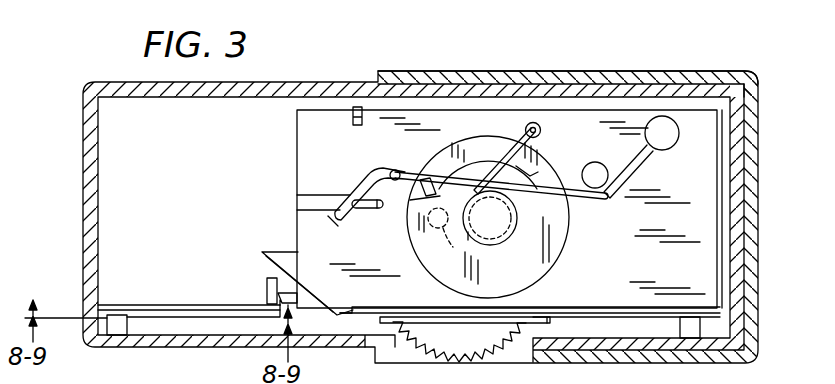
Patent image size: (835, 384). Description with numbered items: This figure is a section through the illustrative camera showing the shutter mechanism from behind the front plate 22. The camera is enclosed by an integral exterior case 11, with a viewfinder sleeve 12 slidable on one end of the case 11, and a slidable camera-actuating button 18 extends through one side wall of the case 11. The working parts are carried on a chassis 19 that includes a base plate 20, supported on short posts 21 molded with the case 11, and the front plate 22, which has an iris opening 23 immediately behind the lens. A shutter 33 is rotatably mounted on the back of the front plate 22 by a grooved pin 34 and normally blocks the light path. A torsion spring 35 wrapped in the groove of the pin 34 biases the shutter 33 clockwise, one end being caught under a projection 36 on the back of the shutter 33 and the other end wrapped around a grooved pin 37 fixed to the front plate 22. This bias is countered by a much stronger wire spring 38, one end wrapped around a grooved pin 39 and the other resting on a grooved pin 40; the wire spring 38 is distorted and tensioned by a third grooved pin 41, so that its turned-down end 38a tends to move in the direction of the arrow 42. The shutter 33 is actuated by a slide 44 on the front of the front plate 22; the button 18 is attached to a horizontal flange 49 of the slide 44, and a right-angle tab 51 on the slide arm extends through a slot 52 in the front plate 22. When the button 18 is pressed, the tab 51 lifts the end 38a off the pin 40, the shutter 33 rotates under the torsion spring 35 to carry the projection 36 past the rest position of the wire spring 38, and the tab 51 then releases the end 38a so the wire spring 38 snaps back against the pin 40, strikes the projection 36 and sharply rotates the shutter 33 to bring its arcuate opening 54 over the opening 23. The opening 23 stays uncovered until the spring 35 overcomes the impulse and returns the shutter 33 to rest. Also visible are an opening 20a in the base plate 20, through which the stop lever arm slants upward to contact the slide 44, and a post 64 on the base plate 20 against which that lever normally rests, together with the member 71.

The exterior case 11 is at (88, 155).
The viewfinder sleeve 12 is at (570, 80).
The camera-actuating button 18 is at (472, 351).
The chassis 19 is at (290, 148).
The base plate 20 is at (598, 308).
The opening in base plate 20a is at (352, 312).
The short posts 21 is at (120, 323).
The front plate 22 is at (648, 266).
The iris opening 23 is at (441, 229).
The shutter 33 is at (528, 273).
The grooved pin 34 is at (505, 230).
The torsion spring 35 is at (523, 133).
The projection 36 is at (425, 188).
The grooved pin 37 is at (541, 131).
The wire spring 38 is at (628, 161).
The turned-down end of wire spring 38a is at (377, 175).
The grooved pin 39 is at (656, 134).
The grooved pin 40 is at (396, 170).
The third grooved pin 41 is at (609, 194).
The arrow 42 is at (358, 152).
The slide 44 is at (262, 253).
The horizontal flange 49 is at (417, 322).
The right-angle tab 51 is at (363, 208).
The slot 52 is at (307, 205).
The arcuate opening 54 is at (533, 172).
The post 64 is at (267, 290).
The lever arm 71 is at (310, 293).